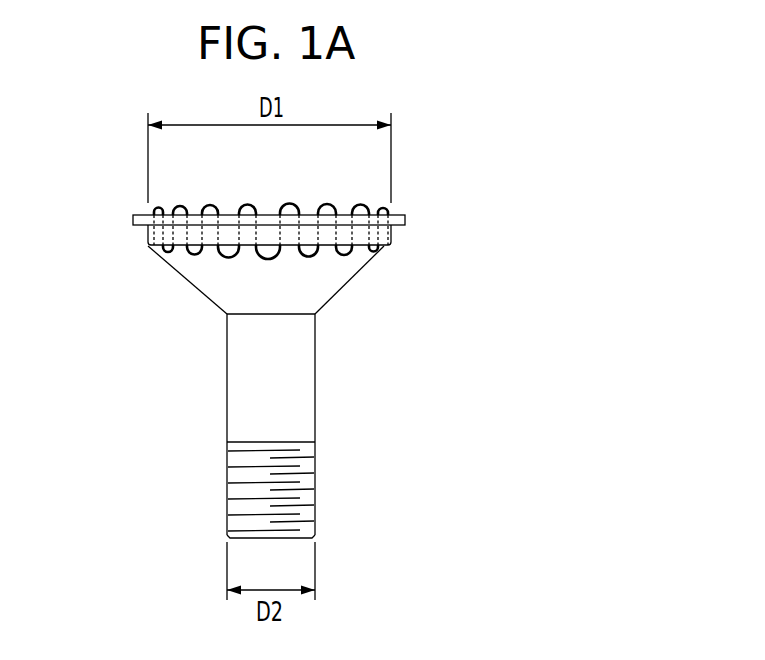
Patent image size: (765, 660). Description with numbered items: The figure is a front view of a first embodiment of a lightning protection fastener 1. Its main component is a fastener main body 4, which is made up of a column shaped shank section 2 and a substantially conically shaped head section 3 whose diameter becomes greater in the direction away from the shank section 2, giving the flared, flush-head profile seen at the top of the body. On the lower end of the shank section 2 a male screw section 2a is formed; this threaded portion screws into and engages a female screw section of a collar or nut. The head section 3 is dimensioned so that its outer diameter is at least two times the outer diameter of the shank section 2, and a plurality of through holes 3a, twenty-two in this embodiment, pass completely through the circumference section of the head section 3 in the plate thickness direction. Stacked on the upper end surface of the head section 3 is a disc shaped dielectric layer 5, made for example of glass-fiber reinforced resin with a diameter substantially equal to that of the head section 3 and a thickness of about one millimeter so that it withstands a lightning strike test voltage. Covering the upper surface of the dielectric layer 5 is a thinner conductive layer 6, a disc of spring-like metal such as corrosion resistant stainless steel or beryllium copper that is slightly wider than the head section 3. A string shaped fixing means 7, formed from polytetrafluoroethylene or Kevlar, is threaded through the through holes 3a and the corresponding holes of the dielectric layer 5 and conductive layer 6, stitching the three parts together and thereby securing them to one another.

The lightning protection fastener 1 is at (500, 155).
The shank section 2 is at (303, 412).
The male screw section 2a is at (213, 442).
The head section 3 is at (318, 293).
The through holes 3a is at (323, 247).
The fastener main body 4 is at (403, 340).
The dielectric layer 5 is at (385, 233).
The conductive layer 6 is at (133, 217).
The fixing means 7 is at (250, 209).